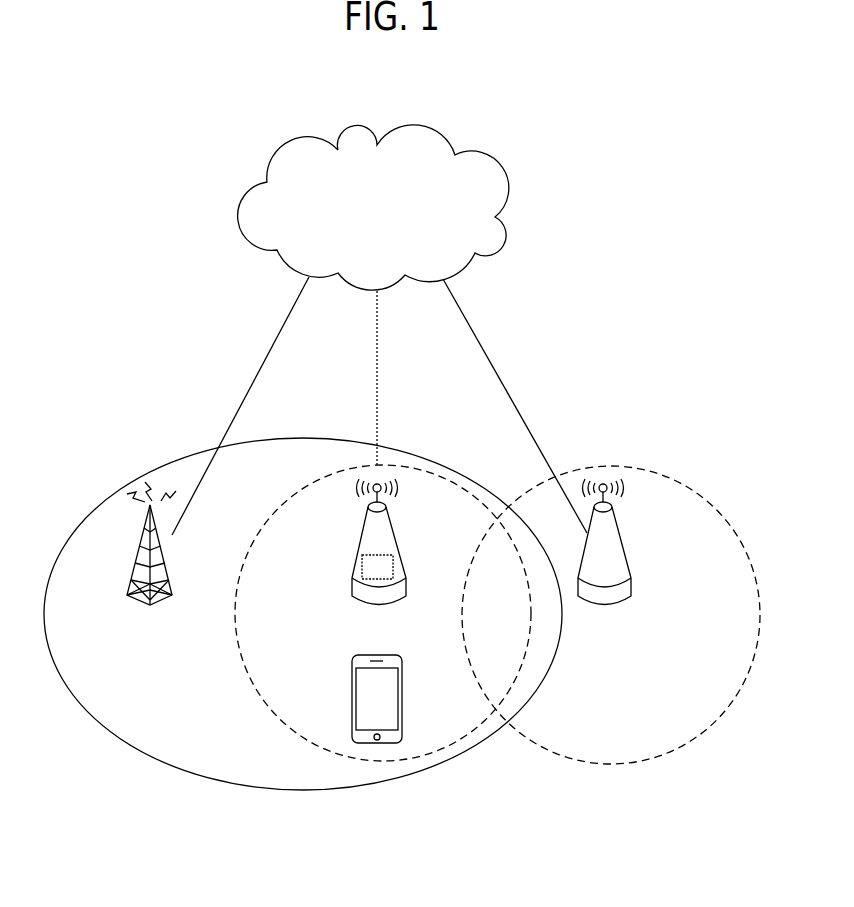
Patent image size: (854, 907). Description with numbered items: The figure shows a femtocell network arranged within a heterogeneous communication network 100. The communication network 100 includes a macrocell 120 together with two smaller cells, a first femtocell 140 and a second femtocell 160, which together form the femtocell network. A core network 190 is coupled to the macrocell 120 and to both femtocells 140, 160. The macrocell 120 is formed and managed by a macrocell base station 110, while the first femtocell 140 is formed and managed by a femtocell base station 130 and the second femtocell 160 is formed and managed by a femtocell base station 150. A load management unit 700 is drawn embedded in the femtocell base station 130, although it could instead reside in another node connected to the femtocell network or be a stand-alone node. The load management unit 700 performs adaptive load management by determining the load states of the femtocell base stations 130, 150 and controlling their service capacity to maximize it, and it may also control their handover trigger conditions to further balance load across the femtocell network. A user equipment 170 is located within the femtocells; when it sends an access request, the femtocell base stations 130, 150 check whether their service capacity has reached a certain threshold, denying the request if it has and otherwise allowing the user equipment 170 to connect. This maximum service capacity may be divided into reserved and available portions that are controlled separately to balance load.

The communication network 100 is at (679, 168).
The macrocell base station 110 is at (168, 559).
The macrocell 120 is at (84, 518).
The femtocell base station 130 is at (396, 548).
The first femtocell 140 is at (410, 462).
The femtocell base station 150 is at (622, 548).
The second femtocell 160 is at (662, 468).
The user equipment 170 is at (404, 702).
The core network 190 is at (437, 125).
The load management unit 700 is at (362, 568).